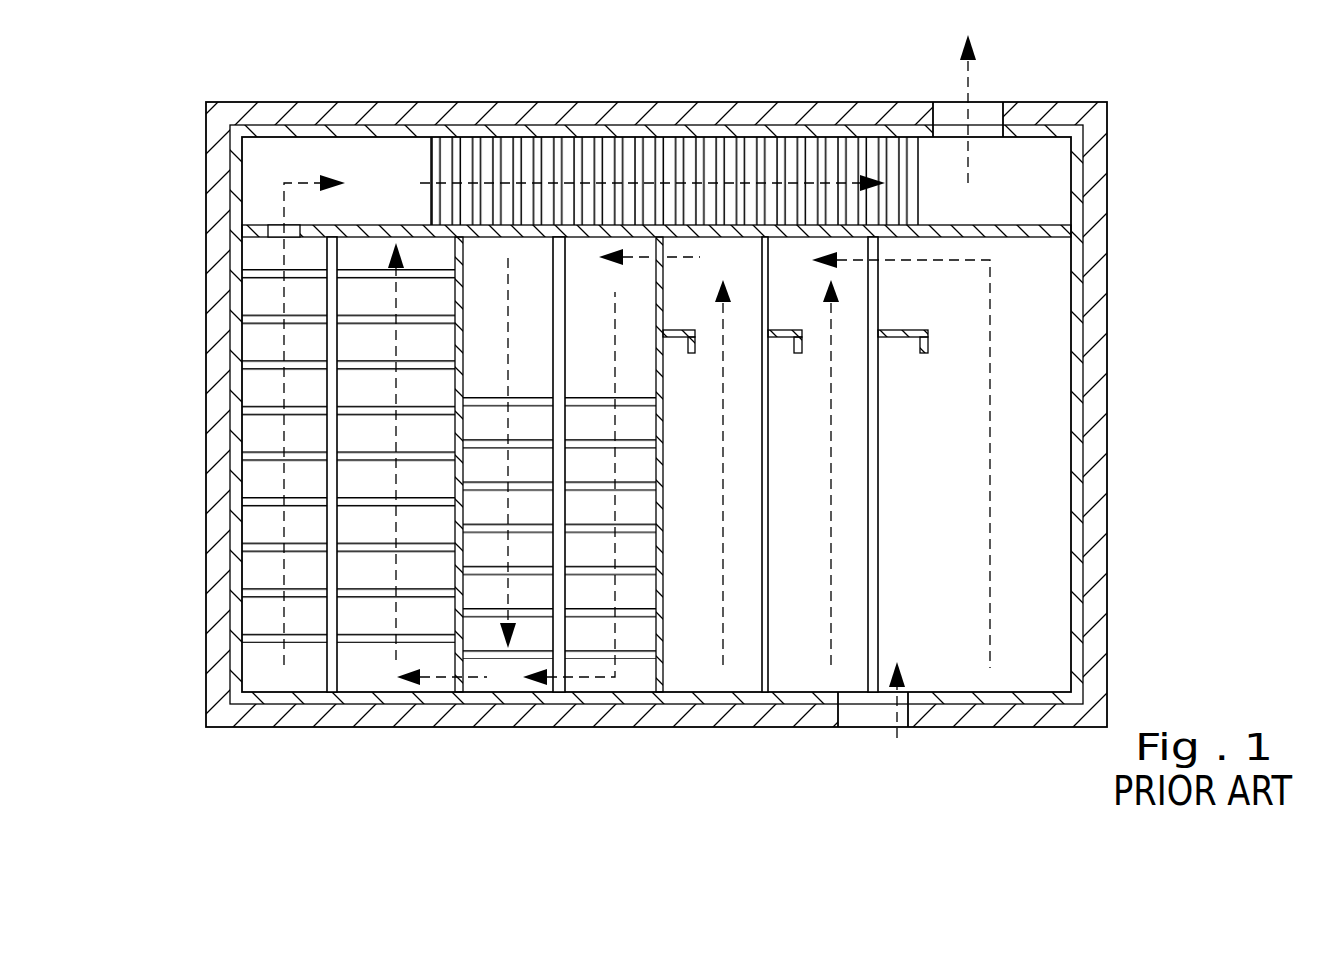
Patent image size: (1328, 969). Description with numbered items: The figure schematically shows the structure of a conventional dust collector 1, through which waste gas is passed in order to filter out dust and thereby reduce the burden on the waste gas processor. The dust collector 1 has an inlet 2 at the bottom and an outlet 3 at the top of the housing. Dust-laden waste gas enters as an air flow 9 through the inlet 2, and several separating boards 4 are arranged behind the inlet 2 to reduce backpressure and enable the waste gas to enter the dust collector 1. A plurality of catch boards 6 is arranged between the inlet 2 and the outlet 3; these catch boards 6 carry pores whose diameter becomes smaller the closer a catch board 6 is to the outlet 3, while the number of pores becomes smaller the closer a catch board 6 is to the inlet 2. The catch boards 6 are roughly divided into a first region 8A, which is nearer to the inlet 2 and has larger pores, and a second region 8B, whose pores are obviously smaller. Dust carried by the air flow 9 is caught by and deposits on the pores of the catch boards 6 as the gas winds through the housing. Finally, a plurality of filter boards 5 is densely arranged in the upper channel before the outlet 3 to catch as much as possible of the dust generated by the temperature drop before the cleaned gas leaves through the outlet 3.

The dust collector 1 is at (197, 96).
The inlet 2 is at (857, 712).
The outlet 3 is at (988, 108).
The separating boards 4 is at (683, 338).
The filter boards 5 is at (892, 148).
The catch boards 6 is at (497, 400).
The first region 8A is at (455, 740).
The second region 8B is at (454, 740).
The air flow 9 is at (905, 720).